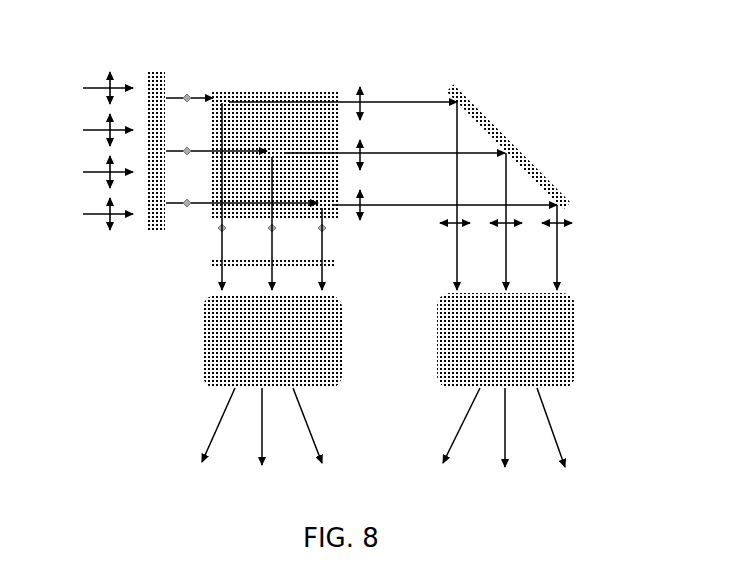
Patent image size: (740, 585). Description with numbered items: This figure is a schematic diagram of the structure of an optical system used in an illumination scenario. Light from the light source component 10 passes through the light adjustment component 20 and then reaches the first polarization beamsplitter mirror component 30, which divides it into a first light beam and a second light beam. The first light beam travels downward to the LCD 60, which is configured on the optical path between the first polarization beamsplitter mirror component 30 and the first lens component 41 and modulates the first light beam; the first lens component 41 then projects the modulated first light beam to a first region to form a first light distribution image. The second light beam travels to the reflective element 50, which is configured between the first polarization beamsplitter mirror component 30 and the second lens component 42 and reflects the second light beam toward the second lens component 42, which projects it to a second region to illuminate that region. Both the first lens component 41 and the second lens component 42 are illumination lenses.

The light source component 10 is at (97, 75).
The light adjustment component 20 is at (155, 72).
The first polarization beamsplitter mirror component 30 is at (275, 90).
The first lens component 41 is at (203, 342).
The second lens component 42 is at (575, 345).
The reflective element 50 is at (447, 87).
The LCD 60 is at (212, 262).